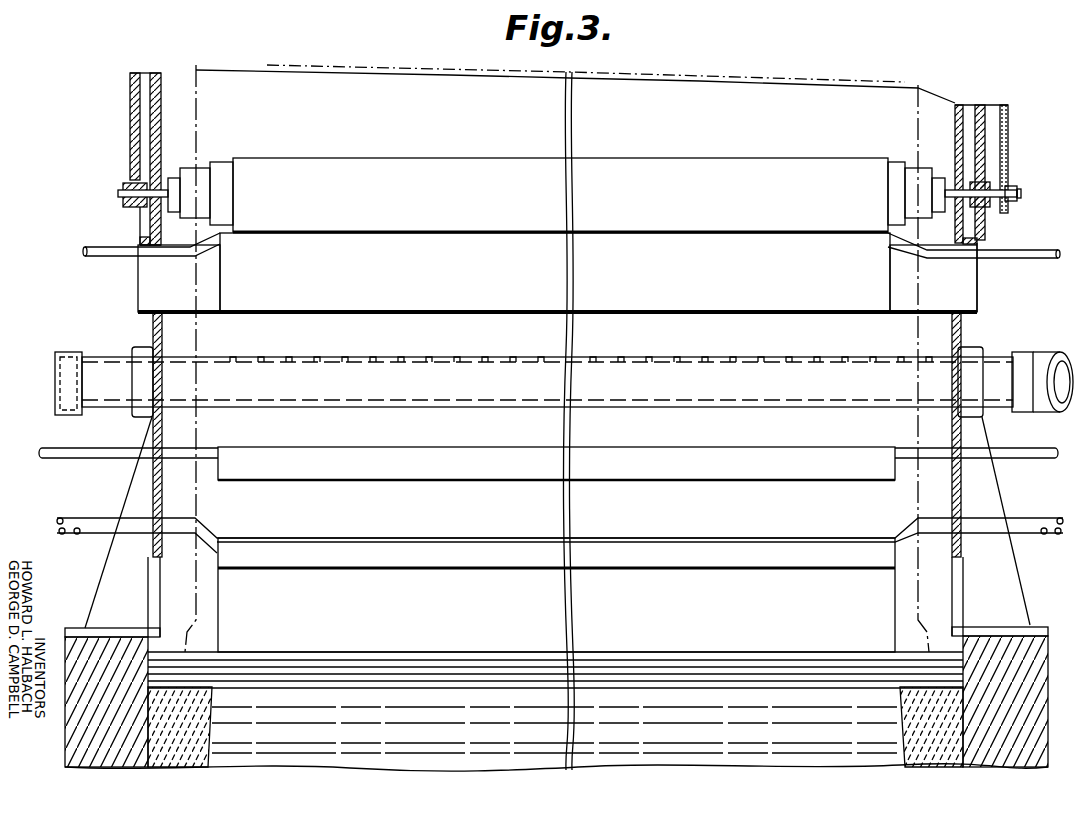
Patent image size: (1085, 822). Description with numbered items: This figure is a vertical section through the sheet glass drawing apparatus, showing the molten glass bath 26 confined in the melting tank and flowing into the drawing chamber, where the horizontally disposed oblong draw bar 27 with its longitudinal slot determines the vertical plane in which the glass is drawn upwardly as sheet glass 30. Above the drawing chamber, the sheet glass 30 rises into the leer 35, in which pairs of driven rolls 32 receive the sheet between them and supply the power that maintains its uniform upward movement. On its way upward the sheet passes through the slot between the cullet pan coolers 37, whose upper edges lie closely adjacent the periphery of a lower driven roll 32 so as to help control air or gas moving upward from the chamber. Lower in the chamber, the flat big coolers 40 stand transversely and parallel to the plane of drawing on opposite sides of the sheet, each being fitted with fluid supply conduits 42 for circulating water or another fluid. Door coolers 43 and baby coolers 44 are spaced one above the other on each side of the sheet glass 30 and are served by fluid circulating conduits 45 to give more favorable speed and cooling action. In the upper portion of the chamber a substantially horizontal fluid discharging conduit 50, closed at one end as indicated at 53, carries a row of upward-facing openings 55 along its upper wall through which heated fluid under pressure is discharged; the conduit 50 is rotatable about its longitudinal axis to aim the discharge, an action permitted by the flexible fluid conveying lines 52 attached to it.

The molten glass bath 26 is at (400, 665).
The draw bar 27 is at (212, 688).
The sheet glass 30 is at (196, 108).
The driven rolls 32 is at (264, 160).
The leer 35 is at (150, 146).
The cullet pan coolers 37 is at (220, 280).
The big coolers 40 is at (470, 537).
The fluid supply conduits 42 is at (70, 534).
The door coolers 43 is at (363, 473).
The baby coolers 44 is at (386, 547).
The fluid circulating conduits 45 is at (80, 522).
The fluid discharging conduits 50 is at (222, 358).
The flexible fluid conveying lines 52 is at (1048, 358).
The closed end 53 is at (55, 377).
The openings 55 is at (362, 357).